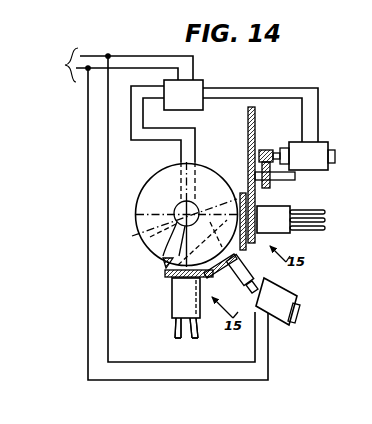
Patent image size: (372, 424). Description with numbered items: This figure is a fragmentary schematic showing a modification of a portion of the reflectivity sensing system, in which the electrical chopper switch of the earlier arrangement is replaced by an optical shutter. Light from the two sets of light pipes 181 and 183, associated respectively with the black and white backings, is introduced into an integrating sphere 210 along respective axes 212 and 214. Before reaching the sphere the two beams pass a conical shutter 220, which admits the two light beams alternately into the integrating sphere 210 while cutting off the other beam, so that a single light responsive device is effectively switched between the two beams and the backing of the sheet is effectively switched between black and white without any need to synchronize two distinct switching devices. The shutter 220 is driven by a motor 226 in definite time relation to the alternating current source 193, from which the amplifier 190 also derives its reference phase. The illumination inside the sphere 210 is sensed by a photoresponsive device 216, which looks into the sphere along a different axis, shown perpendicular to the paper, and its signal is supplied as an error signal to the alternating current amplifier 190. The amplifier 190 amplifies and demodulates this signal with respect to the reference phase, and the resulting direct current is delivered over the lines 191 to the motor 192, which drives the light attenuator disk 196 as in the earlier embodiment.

The light pipes 181 is at (200, 326).
The light pipes 183 is at (320, 198).
The alternating current amplifier 190 is at (204, 80).
The lines 191 is at (293, 88).
The motor 192 is at (322, 141).
The alternating current source 193 is at (144, 214).
The light attenuator disk 196 is at (248, 128).
The integrating sphere 210 is at (133, 200).
The axis 212 is at (186, 172).
The axis 214 is at (165, 267).
The photoresponsive device 216 is at (166, 276).
The conical shutter 220 is at (171, 290).
The motor 226 is at (297, 296).